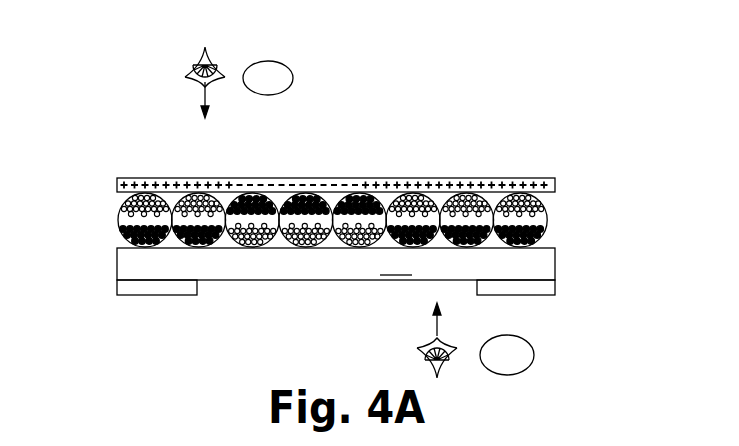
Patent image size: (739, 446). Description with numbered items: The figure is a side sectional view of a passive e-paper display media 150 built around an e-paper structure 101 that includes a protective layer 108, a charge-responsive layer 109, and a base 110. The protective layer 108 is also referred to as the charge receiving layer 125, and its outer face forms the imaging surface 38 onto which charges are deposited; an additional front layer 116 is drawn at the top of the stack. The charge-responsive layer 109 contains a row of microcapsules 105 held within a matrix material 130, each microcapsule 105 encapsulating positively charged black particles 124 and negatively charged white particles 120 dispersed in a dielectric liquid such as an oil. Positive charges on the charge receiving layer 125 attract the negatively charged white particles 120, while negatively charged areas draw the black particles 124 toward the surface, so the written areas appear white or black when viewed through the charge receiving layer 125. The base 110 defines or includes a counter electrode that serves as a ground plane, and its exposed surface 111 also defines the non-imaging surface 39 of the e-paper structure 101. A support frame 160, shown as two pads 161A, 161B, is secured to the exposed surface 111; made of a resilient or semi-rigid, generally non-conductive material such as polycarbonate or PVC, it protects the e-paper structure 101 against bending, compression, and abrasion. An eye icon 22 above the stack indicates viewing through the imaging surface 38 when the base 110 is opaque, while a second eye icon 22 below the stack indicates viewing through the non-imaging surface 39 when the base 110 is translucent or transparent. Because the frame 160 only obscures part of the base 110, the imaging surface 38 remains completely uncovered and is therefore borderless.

The passive e-paper display media 150 is at (95, 76).
The eye icon 22 is at (212, 62).
The charge receiving layer 125 is at (155, 177).
The front substrate 116 is at (200, 177).
The imaging surface 38 is at (361, 170).
The protective layer 108 is at (548, 176).
The matrix material 130 is at (116, 210).
The e-paper structure 101 is at (332, 204).
The white particles 120 is at (548, 208).
The microcapsule 105 is at (550, 226).
The black particles 124 is at (548, 240).
The charge-responsive layer 109 is at (113, 240).
The base 110 is at (336, 293).
The exposed surface 111 is at (363, 281).
The non-imaging surface 39 is at (267, 295).
The support frame 160 is at (338, 320).
The first contact 161A is at (178, 290).
The second contact 161B is at (540, 290).